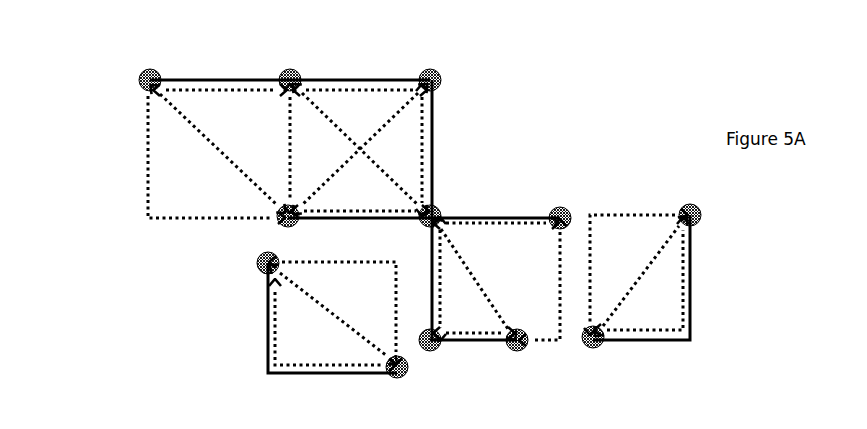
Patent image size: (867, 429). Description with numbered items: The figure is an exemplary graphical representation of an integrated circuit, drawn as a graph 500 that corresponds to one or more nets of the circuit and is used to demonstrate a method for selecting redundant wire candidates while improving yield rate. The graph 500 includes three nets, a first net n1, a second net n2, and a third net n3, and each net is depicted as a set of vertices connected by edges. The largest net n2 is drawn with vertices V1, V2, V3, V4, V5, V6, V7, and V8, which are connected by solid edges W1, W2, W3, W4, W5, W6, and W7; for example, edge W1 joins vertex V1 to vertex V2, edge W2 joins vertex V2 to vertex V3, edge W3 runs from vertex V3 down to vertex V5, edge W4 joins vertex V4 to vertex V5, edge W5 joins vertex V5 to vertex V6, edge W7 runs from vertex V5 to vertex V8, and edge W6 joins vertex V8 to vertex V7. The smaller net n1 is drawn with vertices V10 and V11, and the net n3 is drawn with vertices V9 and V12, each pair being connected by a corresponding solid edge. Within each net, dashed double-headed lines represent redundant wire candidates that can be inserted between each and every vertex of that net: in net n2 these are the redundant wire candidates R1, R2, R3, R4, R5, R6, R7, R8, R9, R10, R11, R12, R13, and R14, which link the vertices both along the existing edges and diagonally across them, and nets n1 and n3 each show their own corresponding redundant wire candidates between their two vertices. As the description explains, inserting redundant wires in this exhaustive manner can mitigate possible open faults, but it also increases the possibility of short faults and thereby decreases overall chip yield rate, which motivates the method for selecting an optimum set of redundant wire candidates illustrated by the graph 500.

The graph 500 is at (372, 210).
The net n1 is at (326, 330).
The net n2 is at (472, 45).
The net n3 is at (655, 292).
The vertex V1 is at (150, 72).
The vertex V2 is at (290, 72).
The vertex V3 is at (430, 72).
The vertex V4 is at (288, 227).
The vertex V5 is at (437, 213).
The vertex V6 is at (560, 210).
The vertex V7 is at (517, 348).
The vertex V8 is at (430, 348).
The vertex V9 is at (696, 221).
The vertex V10 is at (257, 264).
The vertex V11 is at (403, 382).
The vertex V12 is at (596, 353).
The edge W1 is at (220, 69).
The edge W2 is at (360, 69).
The edge W3 is at (444, 148).
The edge W4 is at (359, 232).
The edge W5 is at (495, 208).
The edge W6 is at (473, 352).
The edge W7 is at (418, 278).
The redundant wire candidate R1 is at (220, 101).
The redundant wire candidate R2 is at (198, 157).
The redundant wire candidate R3 is at (299, 148).
The redundant wire candidate R4 is at (360, 149).
The redundant wire candidate R5 is at (360, 101).
The redundant wire candidate R6 is at (360, 149).
The redundant wire candidate R7 is at (360, 201).
The redundant wire candidate R8 is at (410, 150).
The redundant wire candidate R9 is at (218, 149).
The redundant wire candidate R10 is at (452, 279).
The redundant wire candidate R11 is at (474, 279).
The redundant wire candidate R12 is at (474, 323).
The redundant wire candidate R13 is at (546, 286).
The redundant wire candidate R14 is at (496, 234).